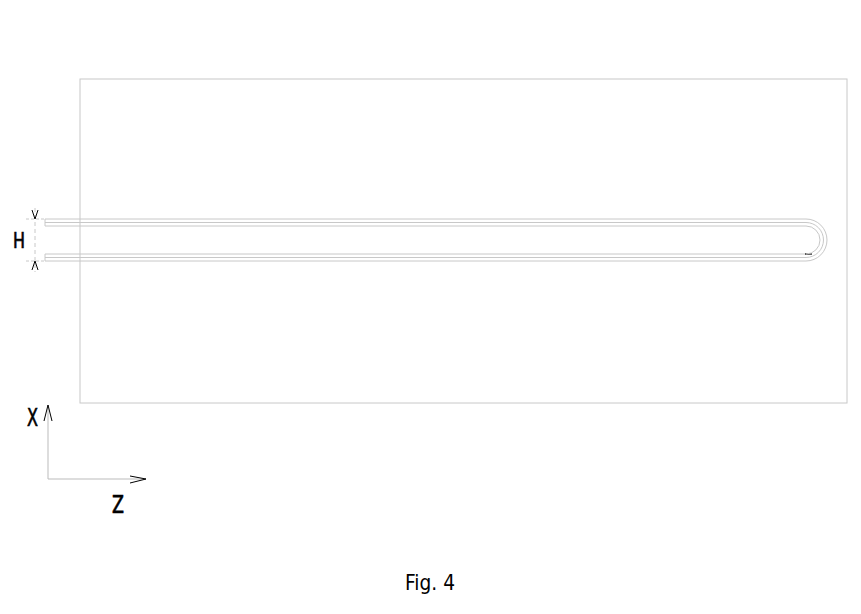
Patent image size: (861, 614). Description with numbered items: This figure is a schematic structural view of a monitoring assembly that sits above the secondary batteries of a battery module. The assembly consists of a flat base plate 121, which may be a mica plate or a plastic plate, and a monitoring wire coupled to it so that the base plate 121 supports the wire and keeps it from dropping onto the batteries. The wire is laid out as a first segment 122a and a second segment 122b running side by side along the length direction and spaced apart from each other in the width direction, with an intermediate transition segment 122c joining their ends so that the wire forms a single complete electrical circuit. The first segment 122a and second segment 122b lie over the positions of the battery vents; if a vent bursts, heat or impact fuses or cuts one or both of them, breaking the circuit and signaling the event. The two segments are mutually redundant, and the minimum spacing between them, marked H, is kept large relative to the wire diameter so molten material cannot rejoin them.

The base plate 121 is at (428, 363).
The first segment 122a is at (68, 219).
The second segment 122b is at (68, 261).
The intermediate transition segment 122c is at (828, 242).